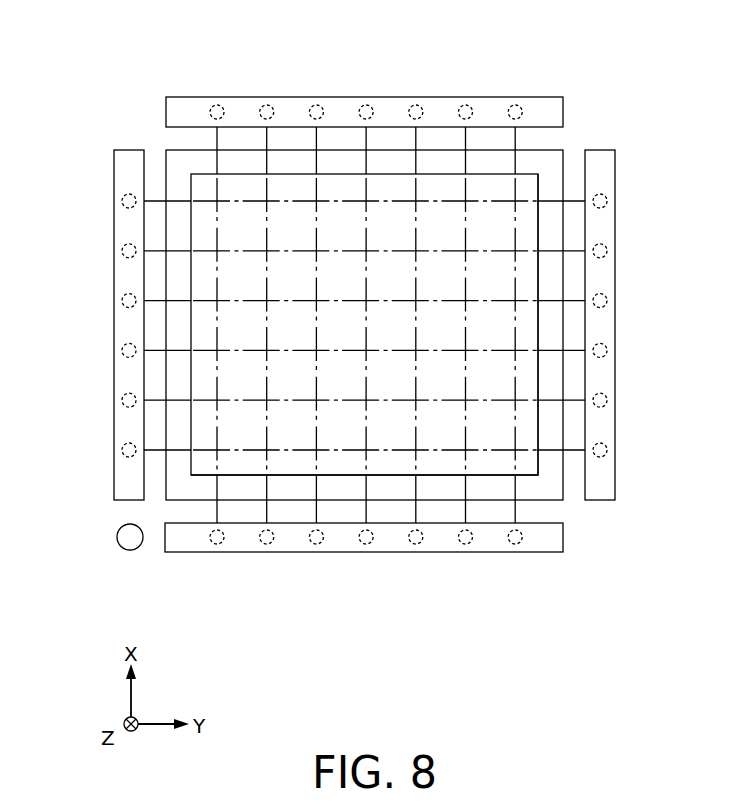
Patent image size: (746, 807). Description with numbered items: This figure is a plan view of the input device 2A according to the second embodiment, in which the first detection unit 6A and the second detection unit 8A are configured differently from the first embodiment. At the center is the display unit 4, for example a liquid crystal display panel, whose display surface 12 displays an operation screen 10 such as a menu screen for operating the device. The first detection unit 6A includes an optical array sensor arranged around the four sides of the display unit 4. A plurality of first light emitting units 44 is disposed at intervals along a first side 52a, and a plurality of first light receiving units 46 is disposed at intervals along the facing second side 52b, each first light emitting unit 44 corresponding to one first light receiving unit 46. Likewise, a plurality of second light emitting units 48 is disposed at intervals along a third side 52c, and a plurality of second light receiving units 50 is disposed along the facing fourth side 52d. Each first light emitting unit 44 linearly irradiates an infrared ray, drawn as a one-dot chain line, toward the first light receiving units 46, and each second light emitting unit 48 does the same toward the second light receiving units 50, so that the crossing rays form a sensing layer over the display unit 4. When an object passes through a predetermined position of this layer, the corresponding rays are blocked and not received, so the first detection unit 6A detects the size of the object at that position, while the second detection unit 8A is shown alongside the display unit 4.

The input device 2A is at (575, 57).
The display unit 4 is at (553, 149).
The first detection unit 6A is at (481, 90).
The second detection unit 8A is at (117, 537).
The operation screen 10 is at (533, 430).
The display surface 12 is at (392, 187).
The first light emitting units 44 is at (317, 105).
The first light receiving units 46 is at (317, 545).
The second light emitting units 48 is at (607, 300).
The second light receiving units 50 is at (122, 300).
The first side 52a is at (181, 150).
The second side 52b is at (190, 502).
The third side 52c is at (565, 178).
The fourth side 52d is at (165, 175).